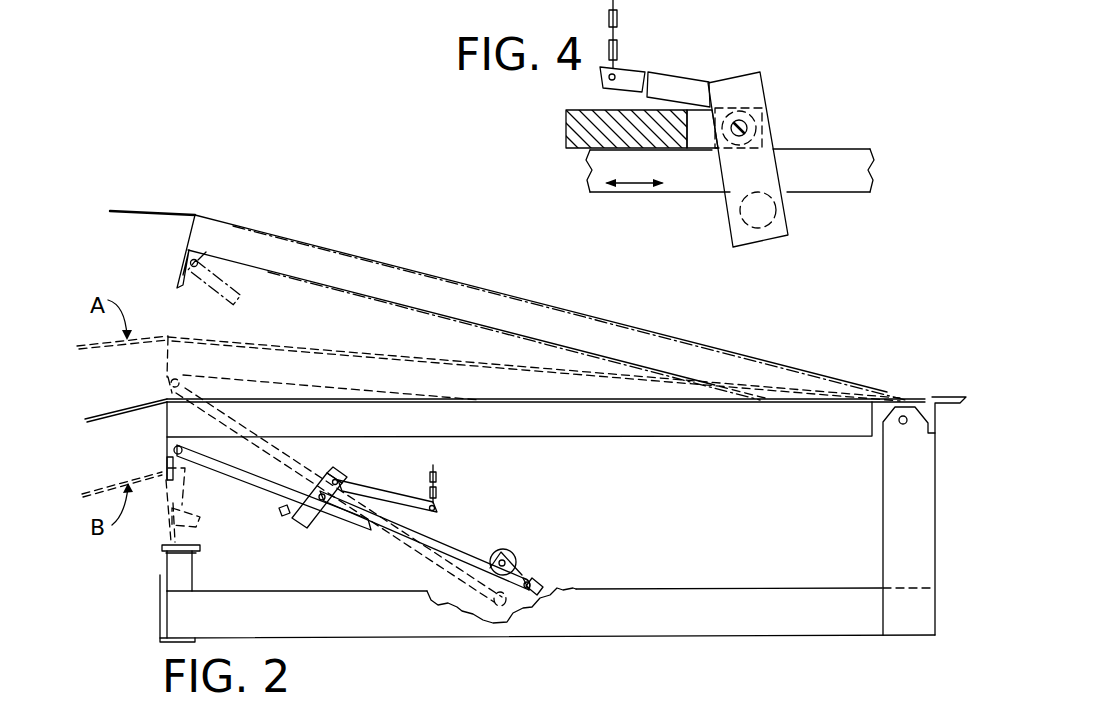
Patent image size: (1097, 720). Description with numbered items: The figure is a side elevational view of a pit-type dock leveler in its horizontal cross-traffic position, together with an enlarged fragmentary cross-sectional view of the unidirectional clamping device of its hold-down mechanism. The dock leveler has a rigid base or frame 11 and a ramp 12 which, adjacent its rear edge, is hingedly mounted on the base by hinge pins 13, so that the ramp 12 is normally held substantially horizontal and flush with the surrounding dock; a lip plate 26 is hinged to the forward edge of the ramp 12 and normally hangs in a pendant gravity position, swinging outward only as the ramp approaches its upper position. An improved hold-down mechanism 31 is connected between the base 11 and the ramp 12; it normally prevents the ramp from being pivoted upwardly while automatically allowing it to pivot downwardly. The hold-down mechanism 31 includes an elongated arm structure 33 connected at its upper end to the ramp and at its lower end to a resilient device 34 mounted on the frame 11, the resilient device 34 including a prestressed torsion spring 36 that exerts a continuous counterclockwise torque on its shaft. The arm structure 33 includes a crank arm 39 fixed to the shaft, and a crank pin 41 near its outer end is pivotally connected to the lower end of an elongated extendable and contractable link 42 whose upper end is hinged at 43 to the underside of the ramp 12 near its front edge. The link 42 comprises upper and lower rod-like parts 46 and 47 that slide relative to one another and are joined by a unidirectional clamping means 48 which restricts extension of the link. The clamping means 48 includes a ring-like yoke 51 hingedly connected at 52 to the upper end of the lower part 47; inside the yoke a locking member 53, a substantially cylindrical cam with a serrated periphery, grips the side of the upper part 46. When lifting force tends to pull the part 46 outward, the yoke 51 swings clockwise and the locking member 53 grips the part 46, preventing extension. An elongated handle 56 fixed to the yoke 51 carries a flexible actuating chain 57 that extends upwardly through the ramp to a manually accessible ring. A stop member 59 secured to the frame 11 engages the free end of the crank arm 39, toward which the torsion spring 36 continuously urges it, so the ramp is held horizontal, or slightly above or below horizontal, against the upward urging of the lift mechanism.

In FIG. 2, the frame 11 is at (692, 617).
In FIG. 2, the ramp 12 is at (521, 398).
In FIG. 2, the hinge pins 13 is at (902, 415).
In FIG. 2, the lip plate 26 is at (146, 410).
In FIG. 2, the hold-down mechanism 31 is at (505, 579).
In FIG. 2, the arm structure 33 is at (282, 516).
In FIG. 2, the resilient device 34 is at (530, 548).
In FIG. 2, the torsion spring 36 is at (508, 549).
In FIG. 2, the crank arm 39 is at (524, 574).
In FIG. 2, the crank pin 41 is at (523, 593).
In FIG. 2, the link 42 is at (308, 458).
In FIG. 2, the hinge 43 is at (174, 450).
In FIG. 2, the upper rod-like part 46 is at (236, 479).
In FIG. 4, the upper rod-like part 46 is at (853, 185).
In FIG. 2, the lower rod-like part 47 is at (423, 547).
In FIG. 4, the lower rod-like part 47 is at (577, 133).
In FIG. 2, the unidirectional clamping means 48 is at (272, 507).
In FIG. 4, the unidirectional clamping means 48 is at (768, 137).
In FIG. 4, the yoke 51 is at (770, 178).
In FIG. 4, the hinge connection 52 is at (750, 127).
In FIG. 4, the locking member 53 is at (720, 148).
In FIG. 2, the handle 56 is at (403, 497).
In FIG. 4, the handle 56 is at (690, 82).
In FIG. 2, the actuating chain 57 is at (437, 480).
In FIG. 4, the actuating chain 57 is at (619, 35).
In FIG. 2, the stop member 59 is at (544, 589).